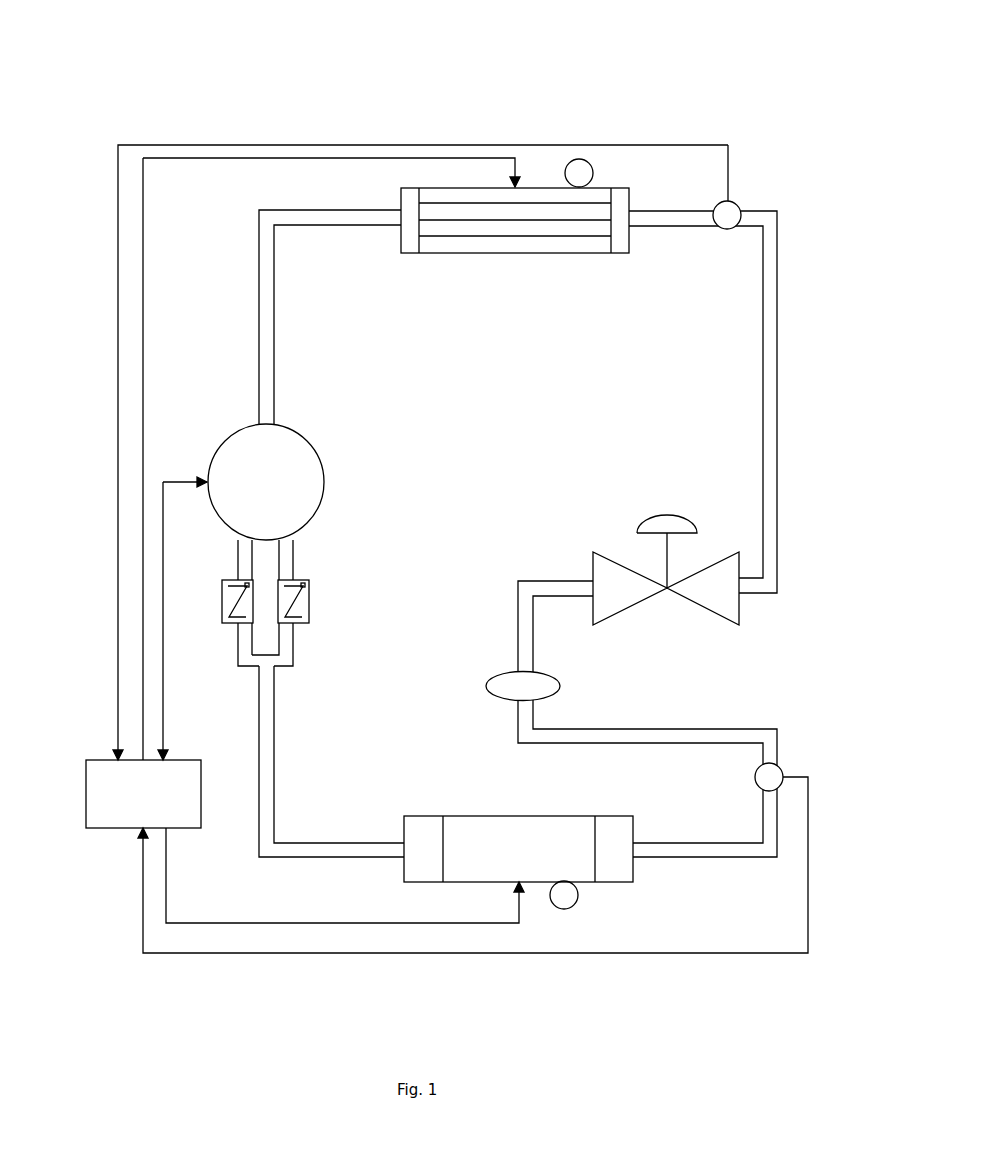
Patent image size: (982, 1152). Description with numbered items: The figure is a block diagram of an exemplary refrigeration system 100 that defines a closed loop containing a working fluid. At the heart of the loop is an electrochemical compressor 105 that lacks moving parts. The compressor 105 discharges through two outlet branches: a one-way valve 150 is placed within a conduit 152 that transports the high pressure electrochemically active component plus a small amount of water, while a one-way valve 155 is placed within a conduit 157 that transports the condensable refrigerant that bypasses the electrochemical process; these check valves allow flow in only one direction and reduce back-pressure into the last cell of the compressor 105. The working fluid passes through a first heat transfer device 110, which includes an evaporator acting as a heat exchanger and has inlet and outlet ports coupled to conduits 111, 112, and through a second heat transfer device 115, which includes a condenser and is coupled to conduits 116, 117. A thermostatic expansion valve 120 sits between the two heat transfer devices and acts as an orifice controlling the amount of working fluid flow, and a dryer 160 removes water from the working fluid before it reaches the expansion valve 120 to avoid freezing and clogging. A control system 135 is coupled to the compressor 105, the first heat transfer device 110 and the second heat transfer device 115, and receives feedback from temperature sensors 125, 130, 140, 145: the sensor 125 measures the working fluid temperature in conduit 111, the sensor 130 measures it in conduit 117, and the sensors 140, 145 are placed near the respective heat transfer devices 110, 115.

The refrigeration system 100 is at (244, 93).
The electrochemical compressor 105 is at (238, 430).
The first heat transfer device 110 is at (514, 254).
The conduit 111 is at (675, 227).
The conduit 112 is at (274, 302).
The second heat transfer device 115 is at (518, 816).
The conduit 116 is at (295, 858).
The conduit 117 is at (698, 858).
The thermostatic expansion valve 120 is at (718, 615).
The temperature sensor 125 is at (727, 229).
The temperature sensor 130 is at (754, 780).
The control system 135 is at (108, 830).
The temperature sensor 140 is at (579, 159).
The temperature sensor 145 is at (565, 910).
The one-way valve 150 is at (279, 590).
The conduit 152 is at (294, 557).
The one-way valve 155 is at (222, 593).
The conduit 157 is at (238, 640).
The dryer 160 is at (560, 685).